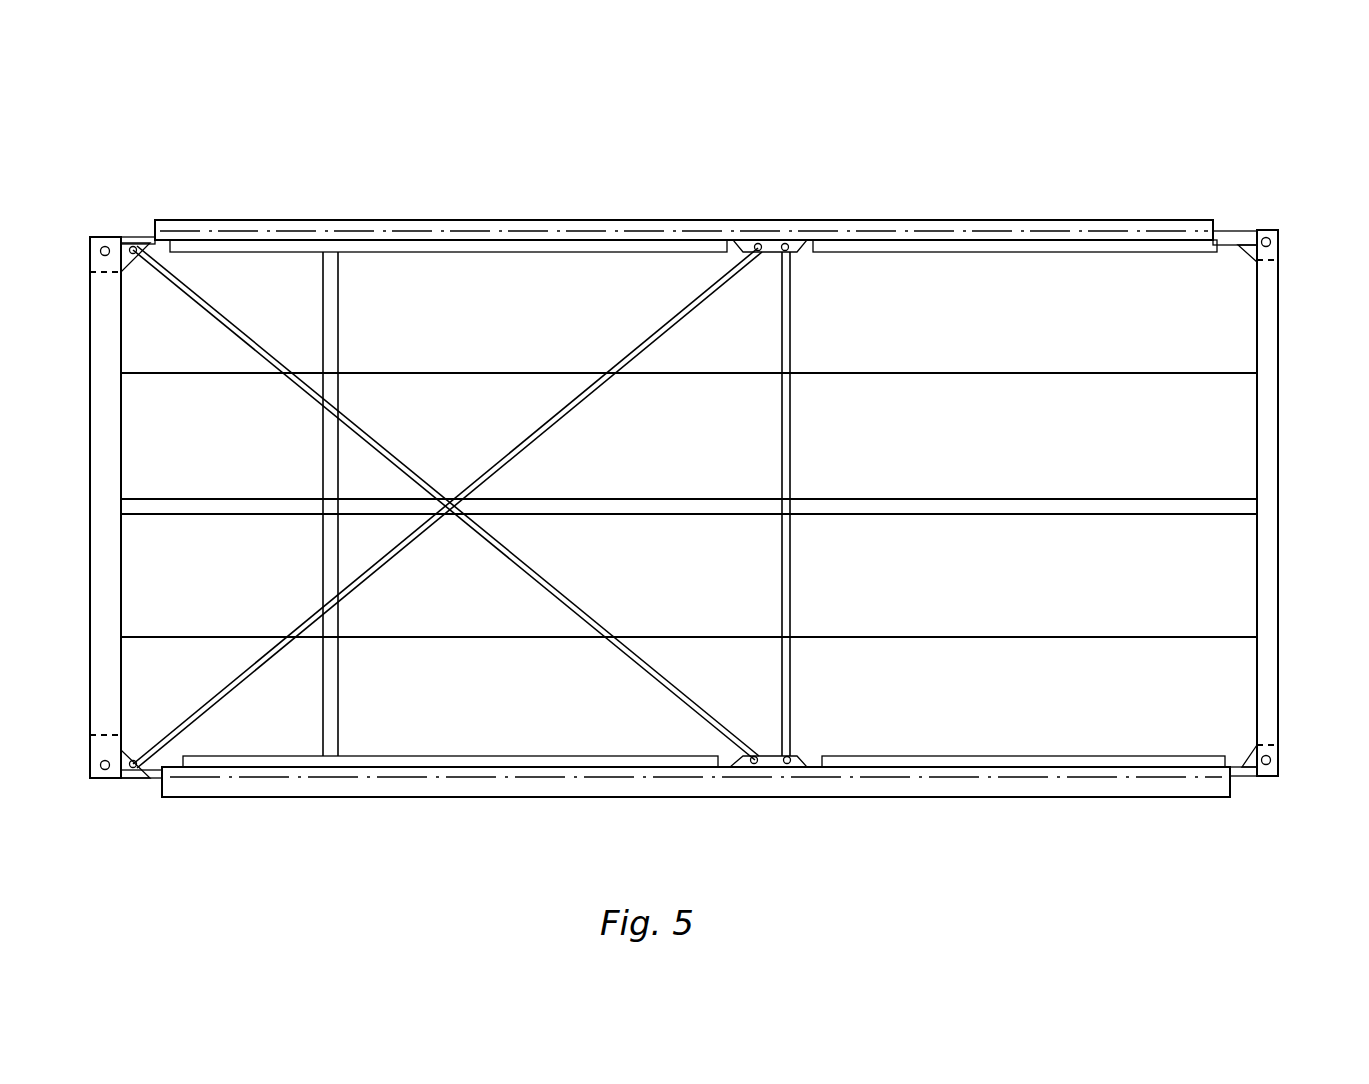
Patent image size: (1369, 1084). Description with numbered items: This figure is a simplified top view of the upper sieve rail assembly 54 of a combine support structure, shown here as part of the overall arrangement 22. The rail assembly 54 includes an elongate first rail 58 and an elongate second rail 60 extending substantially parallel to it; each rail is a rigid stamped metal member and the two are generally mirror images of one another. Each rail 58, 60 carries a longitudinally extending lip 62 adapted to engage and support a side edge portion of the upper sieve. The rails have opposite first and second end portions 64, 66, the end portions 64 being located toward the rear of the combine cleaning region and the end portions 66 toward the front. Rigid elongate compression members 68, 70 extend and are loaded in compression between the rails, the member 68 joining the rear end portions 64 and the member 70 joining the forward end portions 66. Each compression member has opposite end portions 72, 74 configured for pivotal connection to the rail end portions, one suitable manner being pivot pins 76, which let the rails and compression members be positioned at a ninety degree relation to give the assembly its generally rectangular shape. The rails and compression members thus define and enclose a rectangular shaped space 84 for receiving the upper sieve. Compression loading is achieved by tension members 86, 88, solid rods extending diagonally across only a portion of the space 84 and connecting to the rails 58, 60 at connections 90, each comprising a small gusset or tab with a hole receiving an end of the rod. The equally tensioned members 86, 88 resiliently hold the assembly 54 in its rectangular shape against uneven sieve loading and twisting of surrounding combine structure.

The frame assembly 22 is at (1284, 138).
The upper sieve rail assembly 54 is at (88, 500).
The first rail 58 is at (148, 780).
The second rail 60 is at (140, 237).
The lip 62 is at (588, 255).
The first end portion 64 is at (1240, 231).
The second end portion 66 is at (123, 237).
The compression member 68 is at (1278, 509).
The compression member 70 is at (90, 543).
The end portion 72 is at (89, 259).
The end portion 74 is at (89, 744).
The pivot pin 76 is at (104, 247).
The rectangular shaped space 84 is at (540, 276).
The tension member 86 is at (398, 460).
The tension member 88 is at (568, 407).
The connection 90 is at (134, 254).